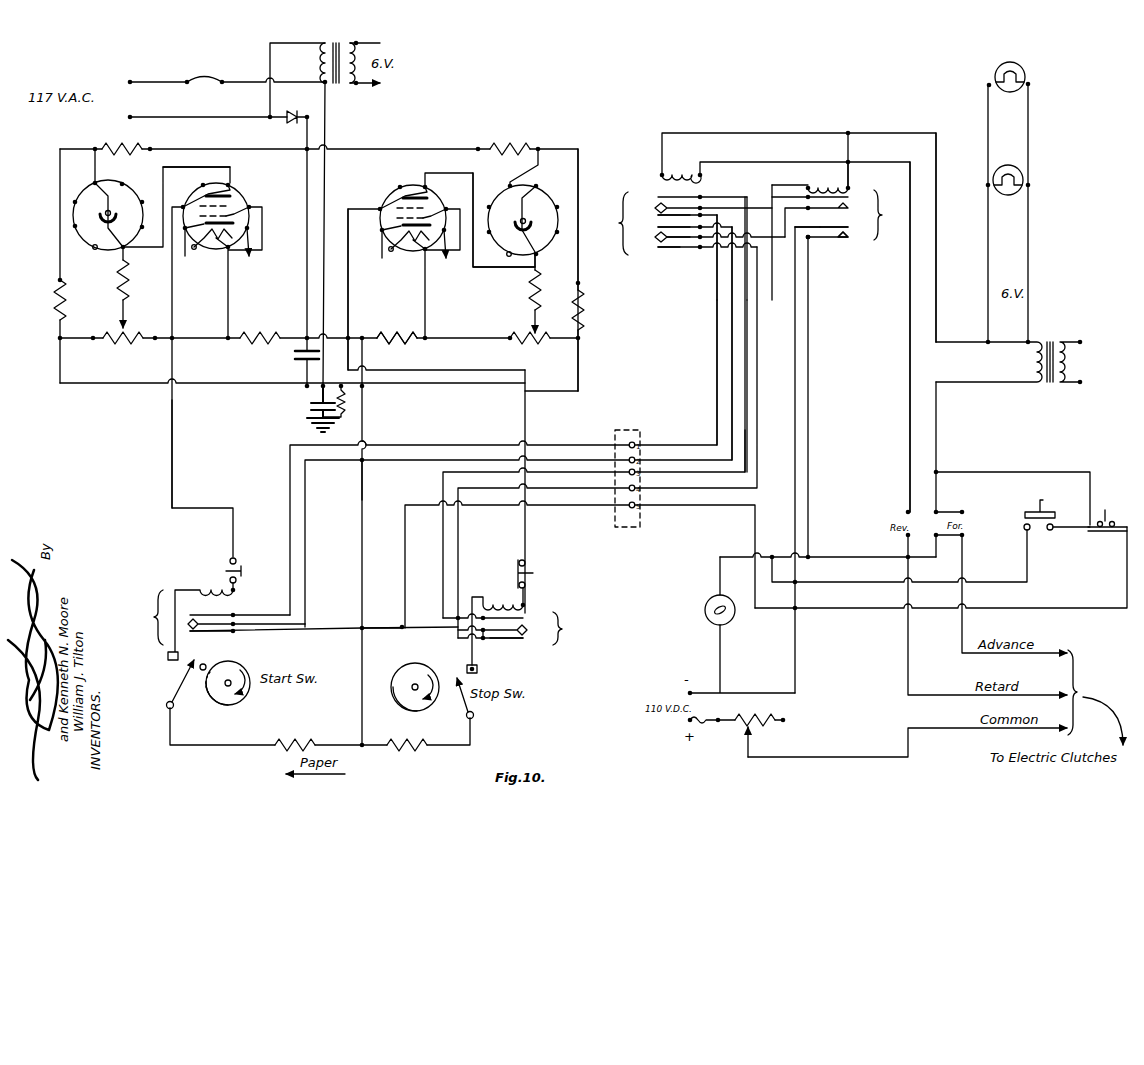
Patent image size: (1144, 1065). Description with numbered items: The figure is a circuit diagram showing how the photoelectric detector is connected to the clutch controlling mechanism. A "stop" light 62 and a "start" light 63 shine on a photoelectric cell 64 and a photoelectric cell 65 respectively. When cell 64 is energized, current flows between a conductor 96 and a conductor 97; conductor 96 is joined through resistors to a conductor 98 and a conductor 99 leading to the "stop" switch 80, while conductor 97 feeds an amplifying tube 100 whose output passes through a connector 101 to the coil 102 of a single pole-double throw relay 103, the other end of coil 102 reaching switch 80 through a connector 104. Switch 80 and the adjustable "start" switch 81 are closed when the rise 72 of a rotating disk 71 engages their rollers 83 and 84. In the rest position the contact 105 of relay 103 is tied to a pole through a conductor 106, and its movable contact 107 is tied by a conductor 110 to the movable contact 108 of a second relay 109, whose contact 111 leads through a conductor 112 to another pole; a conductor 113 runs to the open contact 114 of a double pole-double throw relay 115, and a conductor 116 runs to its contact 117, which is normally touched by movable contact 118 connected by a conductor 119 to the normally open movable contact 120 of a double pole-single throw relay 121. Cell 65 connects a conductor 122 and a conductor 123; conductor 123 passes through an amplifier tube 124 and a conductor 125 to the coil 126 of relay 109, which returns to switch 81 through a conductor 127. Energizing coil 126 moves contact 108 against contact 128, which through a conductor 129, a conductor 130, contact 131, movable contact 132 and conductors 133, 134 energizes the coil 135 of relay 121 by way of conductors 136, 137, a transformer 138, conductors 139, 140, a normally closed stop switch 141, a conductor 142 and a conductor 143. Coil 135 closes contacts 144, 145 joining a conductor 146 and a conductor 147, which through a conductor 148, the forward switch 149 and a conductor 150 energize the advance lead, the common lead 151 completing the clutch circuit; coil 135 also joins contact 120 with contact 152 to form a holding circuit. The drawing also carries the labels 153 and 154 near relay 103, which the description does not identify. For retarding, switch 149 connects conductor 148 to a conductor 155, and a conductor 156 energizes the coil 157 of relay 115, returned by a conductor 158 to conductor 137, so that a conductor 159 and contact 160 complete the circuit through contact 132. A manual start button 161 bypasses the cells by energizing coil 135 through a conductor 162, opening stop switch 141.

The "stop" light 62 is at (1022, 70).
The "start" light 63 is at (1020, 173).
The photoelectric cell 64 is at (540, 192).
The photoelectric cell 65 is at (148, 180).
The rotating disk 71 is at (227, 706).
The rise 72 is at (255, 692).
The "stop" switch 80 is at (478, 672).
The "start" switch 81 is at (162, 678).
The roller 83 is at (461, 672).
The roller 84 is at (217, 670).
The conductor 96 is at (578, 189).
The conductor 97 is at (478, 268).
The conductor 98 is at (462, 337).
The conductor 99 is at (367, 485).
The amplifying tube 100 is at (391, 190).
The connector 101 is at (351, 302).
The coil 102 is at (500, 598).
The single pole-double throw relay 103 is at (516, 628).
The connector 104 is at (467, 652).
The contact 105 is at (502, 641).
The conductor 106 is at (464, 543).
The movable contact 107 is at (484, 648).
The movable contact 108 is at (232, 633).
The single pole-double throw relay 109 is at (155, 620).
The conductor 110 is at (326, 632).
The contact 111 is at (199, 633).
The conductor 112 is at (308, 508).
The conductor 113 is at (732, 346).
The contact 114 is at (681, 239).
The double pole-double throw relay 115 is at (622, 218).
The conductor 116 is at (747, 393).
The contact 117 is at (668, 250).
The movable contact 118 is at (692, 229).
The conductor 119 is at (790, 220).
The movable contact 120 is at (824, 229).
The double pole-single throw relay 121 is at (840, 216).
The conductor 122 is at (60, 212).
The conductor 123 is at (188, 169).
The amplifier tube 124 is at (238, 198).
The conductor 125 is at (172, 428).
The coil 126 is at (226, 576).
The conductor 127 is at (180, 588).
The contact 128 is at (240, 614).
The conductor 129 is at (290, 450).
The conductor 130 is at (717, 312).
The contact 131 is at (658, 215).
The movable contact 132 is at (700, 198).
The conductor 133 is at (756, 197).
The conductor 134 is at (791, 232).
The coil 135 is at (811, 177).
The conductor 136 is at (852, 156).
The conductor 137 is at (937, 220).
The transformer 138 is at (1028, 364).
The conductor 139 is at (937, 428).
The conductor 140 is at (1021, 466).
The stop switch 141 is at (1106, 512).
The conductor 142 is at (1046, 607).
The conductor 143 is at (405, 527).
The contact 144 is at (812, 240).
The contact 145 is at (843, 240).
The conductor 146 is at (795, 385).
The conductor 147 is at (808, 366).
The conductor 148 is at (860, 557).
The forward switch 149 is at (950, 546).
The conductor 150 is at (962, 638).
The common lead 151 is at (826, 761).
The contact 152 is at (850, 186).
The relay coil 153 is at (527, 610).
The conductor 154 is at (447, 552).
The conductor 155 is at (906, 641).
The conductor 156 is at (910, 302).
The coil 157 is at (682, 168).
The conductor 158 is at (735, 133).
The conductor 159 is at (745, 434).
The contact 160 is at (665, 185).
The start button 161 is at (1032, 508).
The conductor 162 is at (840, 582).